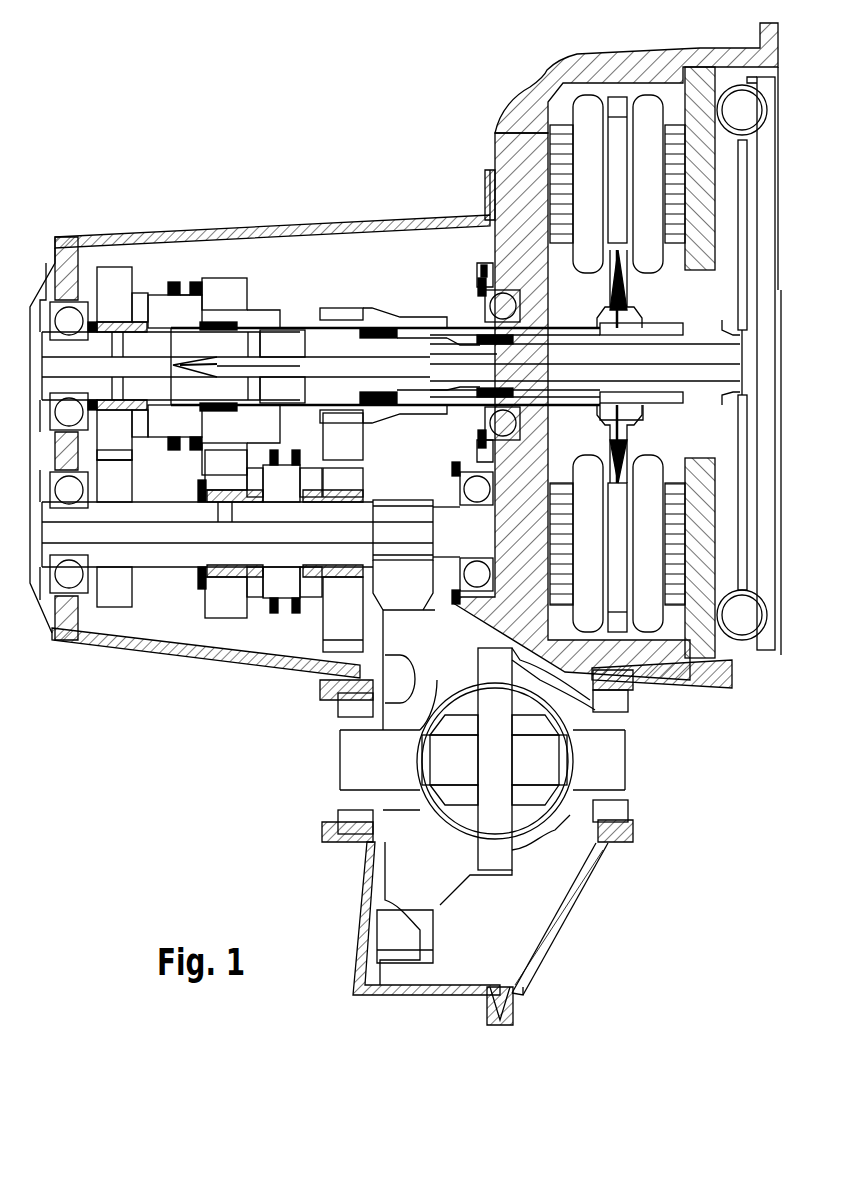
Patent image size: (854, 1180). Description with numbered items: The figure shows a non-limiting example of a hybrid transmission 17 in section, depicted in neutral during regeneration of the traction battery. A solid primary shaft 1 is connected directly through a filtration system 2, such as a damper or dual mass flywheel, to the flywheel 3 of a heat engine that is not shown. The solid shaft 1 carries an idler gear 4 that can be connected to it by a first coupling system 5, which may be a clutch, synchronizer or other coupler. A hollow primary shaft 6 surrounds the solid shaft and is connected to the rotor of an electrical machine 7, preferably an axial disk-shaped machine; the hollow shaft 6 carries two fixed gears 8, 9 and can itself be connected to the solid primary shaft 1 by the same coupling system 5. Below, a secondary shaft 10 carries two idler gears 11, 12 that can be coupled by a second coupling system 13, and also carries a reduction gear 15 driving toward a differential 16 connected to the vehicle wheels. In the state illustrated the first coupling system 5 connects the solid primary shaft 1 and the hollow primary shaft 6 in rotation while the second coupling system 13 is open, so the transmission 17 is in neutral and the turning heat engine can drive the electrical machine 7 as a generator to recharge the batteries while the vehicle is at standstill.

The solid primary shaft 1 is at (700, 380).
The filtration system 2 is at (742, 210).
The flywheel 3 is at (765, 190).
The idler gear 4 is at (118, 287).
The first coupling system 5 is at (175, 287).
The hollow primary shaft 6 is at (380, 315).
The electrical machine 7 is at (590, 215).
The fixed gear 8 is at (343, 314).
The fixed gear 9 is at (218, 283).
The secondary shaft 10 is at (175, 553).
The idler gear 11 is at (235, 612).
The idler gear 12 is at (325, 660).
The second coupling system 13 is at (295, 612).
The reduction gear 15 is at (390, 522).
The differential 16 is at (325, 778).
The transmission 17 is at (116, 216).